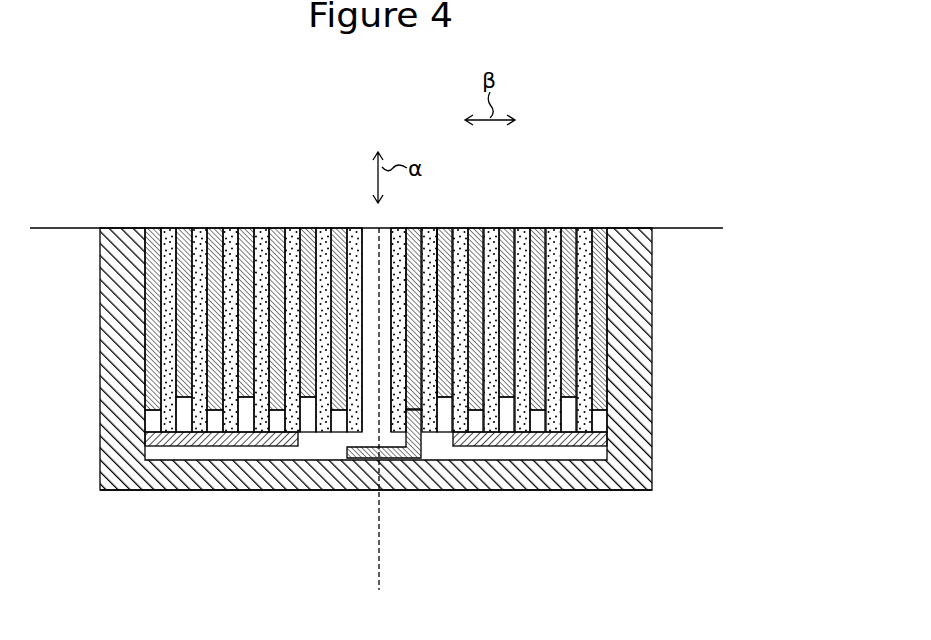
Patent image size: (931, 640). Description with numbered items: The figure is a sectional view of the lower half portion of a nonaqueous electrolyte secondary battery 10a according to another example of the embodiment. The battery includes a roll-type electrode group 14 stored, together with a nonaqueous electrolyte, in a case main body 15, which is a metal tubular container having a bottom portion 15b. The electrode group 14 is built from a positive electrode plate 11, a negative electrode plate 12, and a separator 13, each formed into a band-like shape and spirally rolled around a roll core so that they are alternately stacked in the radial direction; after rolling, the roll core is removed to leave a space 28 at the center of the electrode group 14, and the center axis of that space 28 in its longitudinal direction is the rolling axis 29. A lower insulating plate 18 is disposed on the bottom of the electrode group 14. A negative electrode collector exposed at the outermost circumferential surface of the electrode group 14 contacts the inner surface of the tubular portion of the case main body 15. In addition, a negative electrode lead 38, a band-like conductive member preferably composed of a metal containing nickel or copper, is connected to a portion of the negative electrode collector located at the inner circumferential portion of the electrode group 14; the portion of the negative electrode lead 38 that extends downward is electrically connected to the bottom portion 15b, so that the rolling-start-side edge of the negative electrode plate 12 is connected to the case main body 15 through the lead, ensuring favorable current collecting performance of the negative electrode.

The nonaqueous electrolyte secondary battery 10a is at (691, 299).
The positive electrode plate 11 is at (570, 227).
The negative electrode plate 12 is at (602, 227).
The separator 13 is at (379, 286).
The electrode group 14 is at (565, 400).
The case main body 15 is at (652, 371).
The bottom portion 15b is at (150, 492).
The insulating plate 18 is at (610, 421).
The space 28 is at (370, 227).
The rolling axis 29 is at (435, 227).
The negative electrode lead 38 is at (380, 442).